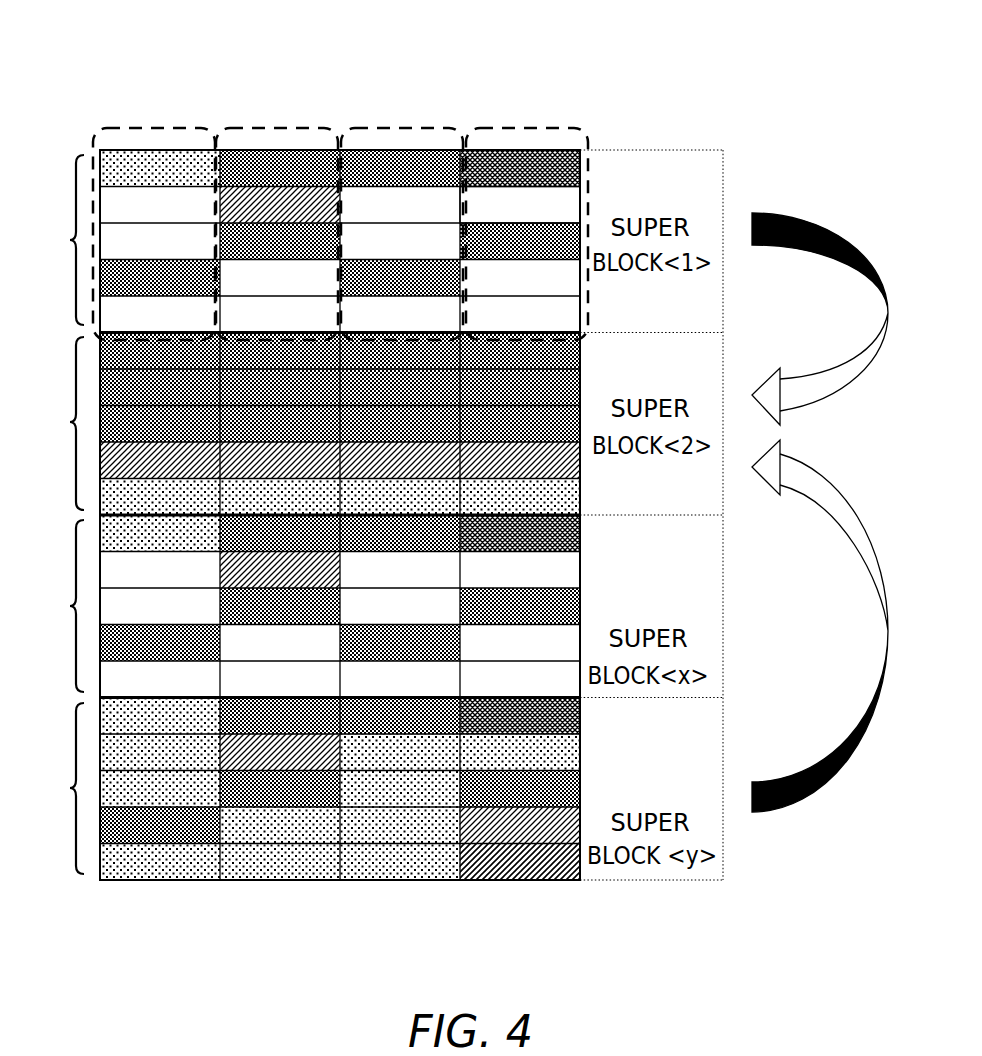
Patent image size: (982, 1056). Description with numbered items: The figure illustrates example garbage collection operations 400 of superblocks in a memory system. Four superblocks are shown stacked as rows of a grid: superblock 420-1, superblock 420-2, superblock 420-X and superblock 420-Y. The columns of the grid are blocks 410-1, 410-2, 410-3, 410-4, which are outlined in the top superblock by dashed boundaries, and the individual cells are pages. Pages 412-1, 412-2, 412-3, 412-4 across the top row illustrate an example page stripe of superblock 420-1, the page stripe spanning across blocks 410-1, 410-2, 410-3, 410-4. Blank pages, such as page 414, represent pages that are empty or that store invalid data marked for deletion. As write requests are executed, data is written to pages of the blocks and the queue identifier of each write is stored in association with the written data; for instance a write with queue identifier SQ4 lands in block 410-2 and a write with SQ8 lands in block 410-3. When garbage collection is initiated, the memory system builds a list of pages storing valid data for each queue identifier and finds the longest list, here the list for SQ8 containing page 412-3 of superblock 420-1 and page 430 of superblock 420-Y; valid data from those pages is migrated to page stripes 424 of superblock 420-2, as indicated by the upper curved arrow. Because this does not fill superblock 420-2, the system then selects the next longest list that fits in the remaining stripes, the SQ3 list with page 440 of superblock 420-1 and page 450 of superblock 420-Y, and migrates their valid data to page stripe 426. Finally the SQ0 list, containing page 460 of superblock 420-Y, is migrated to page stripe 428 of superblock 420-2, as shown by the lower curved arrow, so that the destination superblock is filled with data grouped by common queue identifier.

The garbage collection operations 400 is at (112, 34).
The block 410-1 is at (135, 128).
The block 410-2 is at (262, 128).
The block 410-3 is at (402, 128).
The block 410-4 is at (537, 128).
The page 412-1 is at (162, 162).
The page 412-2 is at (285, 162).
The page 412-3 is at (427, 162).
The page 412-4 is at (560, 162).
The blank page 414 is at (567, 206).
The superblock 420-1 is at (47, 240).
The superblock 420-2 is at (47, 423).
The superblock 420-X is at (47, 606).
The superblock 420-Y is at (47, 788).
The page stripes 424 is at (586, 437).
The page stripe 426 is at (586, 444).
The page stripe 428 is at (586, 481).
The page 430 is at (567, 789).
The page 440 is at (333, 243).
The page 450 is at (578, 869).
The page 460 is at (567, 748).